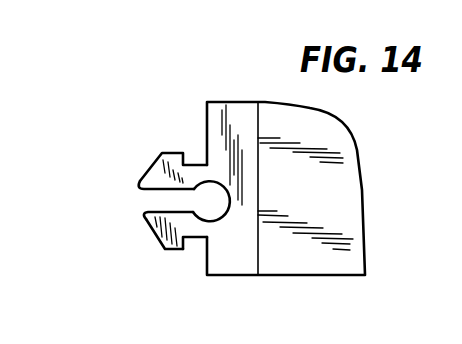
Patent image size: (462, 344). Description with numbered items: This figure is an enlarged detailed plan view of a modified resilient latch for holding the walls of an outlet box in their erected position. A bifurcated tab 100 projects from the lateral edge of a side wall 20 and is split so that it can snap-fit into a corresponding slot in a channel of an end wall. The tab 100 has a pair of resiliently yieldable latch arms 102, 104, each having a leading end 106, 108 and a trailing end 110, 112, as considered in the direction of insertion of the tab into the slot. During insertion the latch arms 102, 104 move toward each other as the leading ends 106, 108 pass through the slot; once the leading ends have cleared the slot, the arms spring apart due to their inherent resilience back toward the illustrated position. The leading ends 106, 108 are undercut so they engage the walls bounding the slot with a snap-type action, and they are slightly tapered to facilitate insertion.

The side wall 20 is at (323, 257).
The bifurcated tab 100 is at (163, 272).
The latch arm 102 is at (147, 231).
The latch arm 104 is at (165, 173).
The leading end 106 is at (142, 216).
The leading end 108 is at (140, 181).
The trailing end 110 is at (196, 238).
The trailing end 112 is at (197, 172).